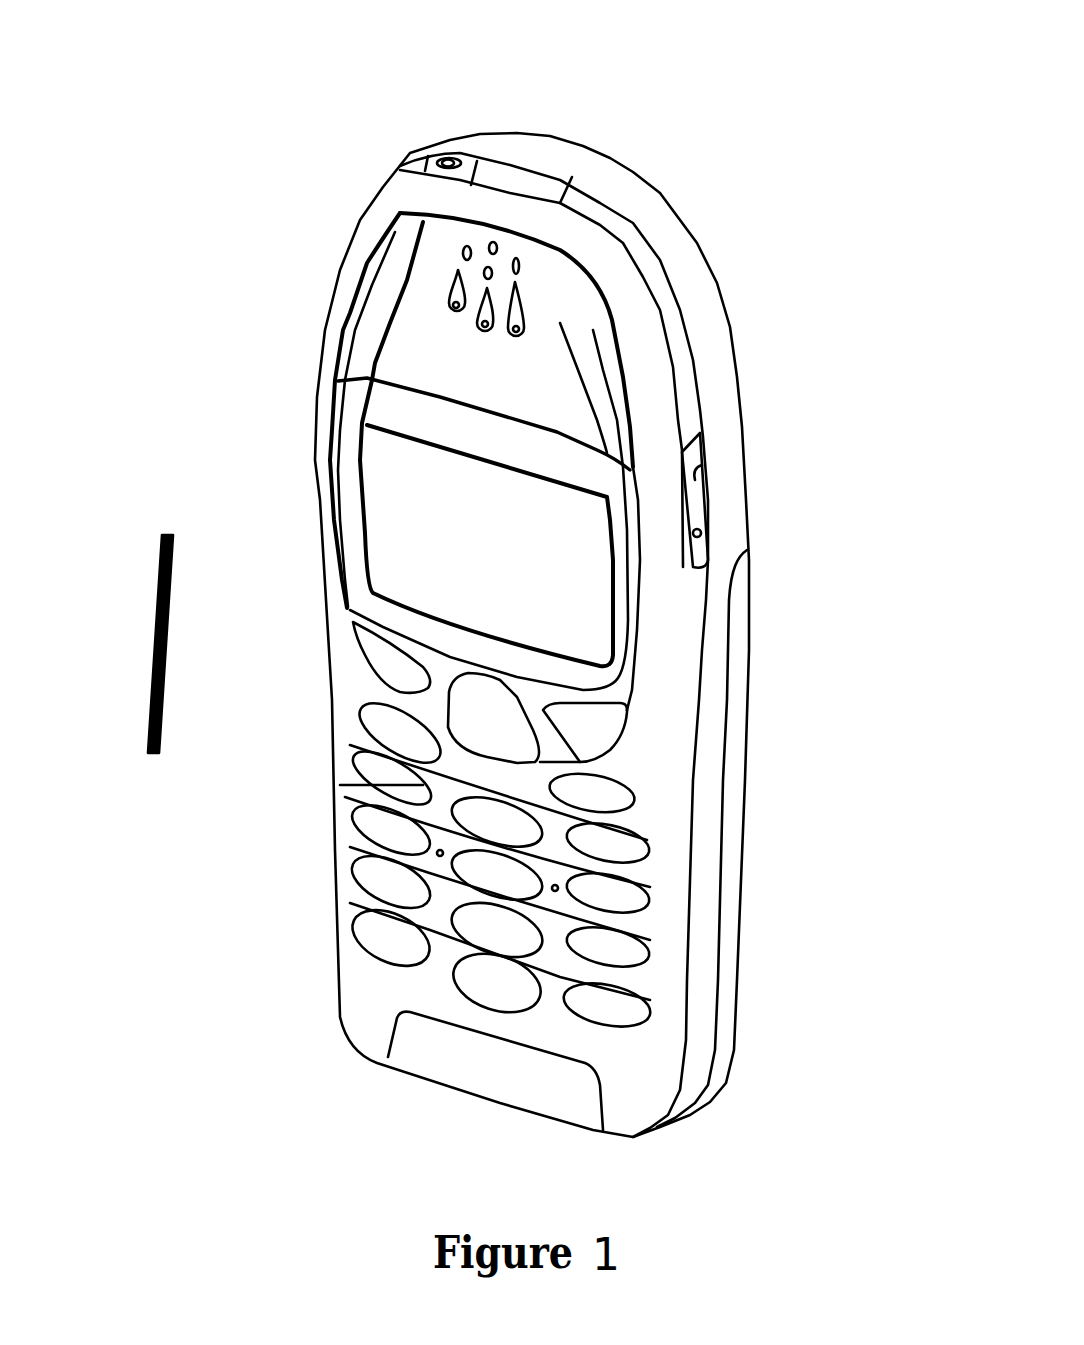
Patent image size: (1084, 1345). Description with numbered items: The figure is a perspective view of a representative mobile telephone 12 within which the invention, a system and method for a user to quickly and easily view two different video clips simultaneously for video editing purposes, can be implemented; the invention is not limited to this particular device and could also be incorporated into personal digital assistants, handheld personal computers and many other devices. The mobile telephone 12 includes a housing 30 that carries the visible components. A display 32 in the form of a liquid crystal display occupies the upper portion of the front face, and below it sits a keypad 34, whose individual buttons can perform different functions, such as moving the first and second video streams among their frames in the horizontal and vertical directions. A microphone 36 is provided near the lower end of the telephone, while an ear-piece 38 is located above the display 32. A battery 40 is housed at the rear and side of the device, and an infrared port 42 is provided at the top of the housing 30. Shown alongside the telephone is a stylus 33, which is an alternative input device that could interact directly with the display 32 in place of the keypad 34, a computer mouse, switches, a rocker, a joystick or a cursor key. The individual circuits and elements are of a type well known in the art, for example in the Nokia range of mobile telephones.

The mobile telephone 12 is at (793, 256).
The housing 30 is at (720, 378).
The display 32 is at (593, 560).
The stylus 33 is at (162, 589).
The keypad 34 is at (620, 1018).
The microphone 36 is at (467, 1047).
The ear-piece 38 is at (472, 290).
The battery 40 is at (727, 978).
The infrared port 42 is at (517, 187).